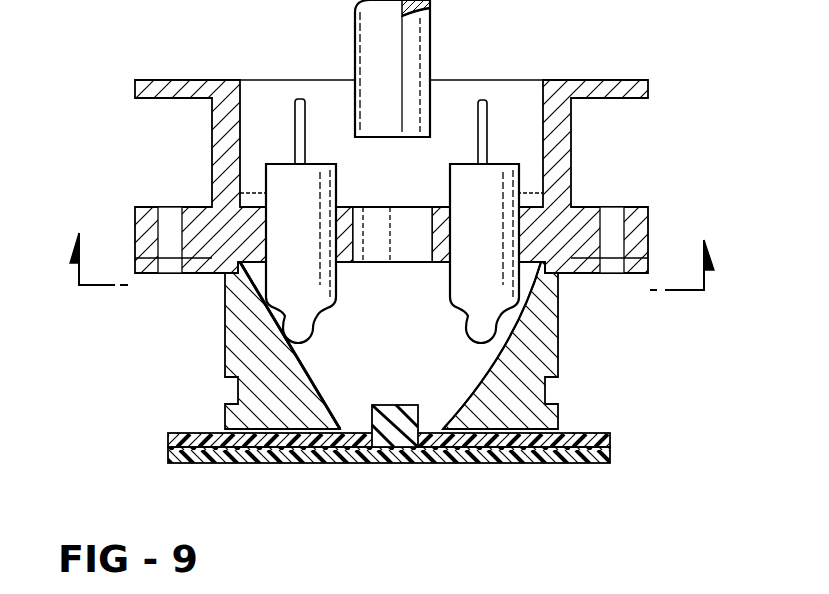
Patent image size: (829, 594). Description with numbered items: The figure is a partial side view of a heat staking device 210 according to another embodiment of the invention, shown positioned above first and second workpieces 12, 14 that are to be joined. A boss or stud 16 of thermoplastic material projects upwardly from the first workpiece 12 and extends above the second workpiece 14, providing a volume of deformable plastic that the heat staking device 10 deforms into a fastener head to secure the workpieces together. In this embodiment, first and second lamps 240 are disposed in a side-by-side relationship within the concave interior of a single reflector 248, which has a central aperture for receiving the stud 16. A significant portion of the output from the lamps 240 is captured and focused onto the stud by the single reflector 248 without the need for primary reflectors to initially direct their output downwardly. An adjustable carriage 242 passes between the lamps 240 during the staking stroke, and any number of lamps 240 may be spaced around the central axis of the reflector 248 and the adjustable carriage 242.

The heat staking device 10 is at (390, 265).
The first workpiece 12 is at (168, 455).
The second workpiece 14 is at (168, 432).
The stud 16 is at (378, 410).
The heat staking device 210 is at (645, 178).
The lamps 240 is at (297, 302).
The adjustable carriage 242 is at (418, 32).
The reflector 248 is at (288, 382).